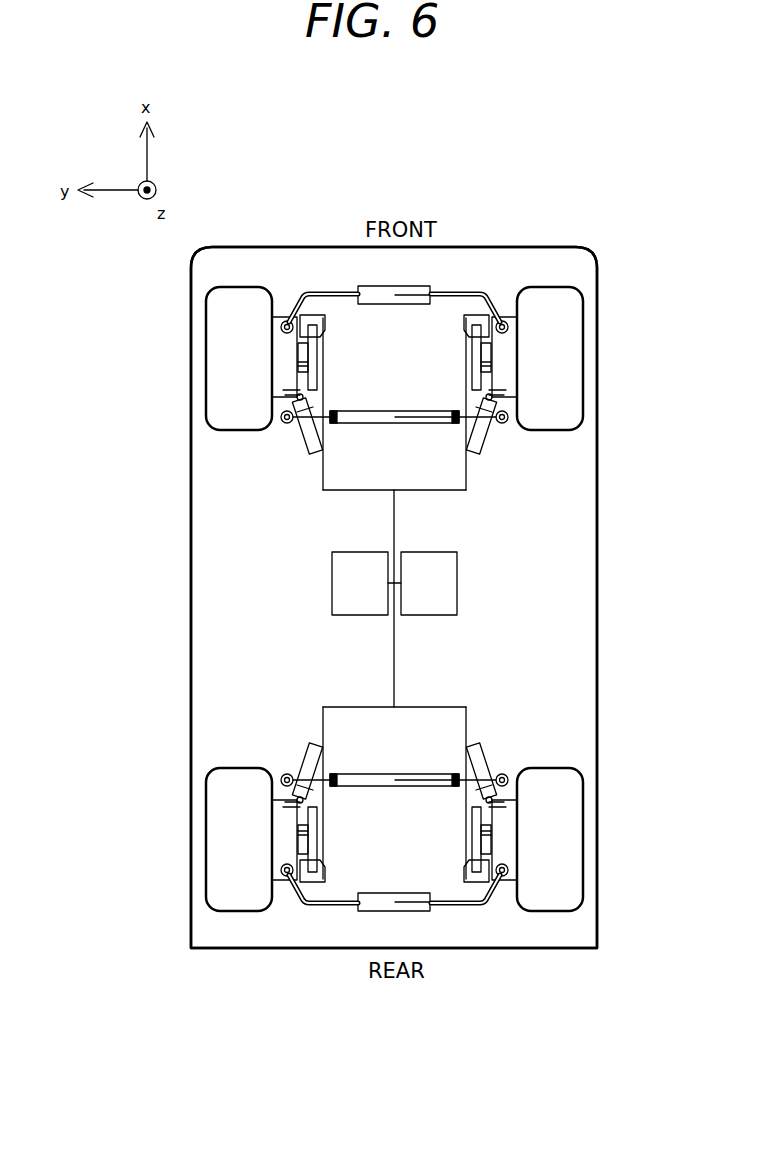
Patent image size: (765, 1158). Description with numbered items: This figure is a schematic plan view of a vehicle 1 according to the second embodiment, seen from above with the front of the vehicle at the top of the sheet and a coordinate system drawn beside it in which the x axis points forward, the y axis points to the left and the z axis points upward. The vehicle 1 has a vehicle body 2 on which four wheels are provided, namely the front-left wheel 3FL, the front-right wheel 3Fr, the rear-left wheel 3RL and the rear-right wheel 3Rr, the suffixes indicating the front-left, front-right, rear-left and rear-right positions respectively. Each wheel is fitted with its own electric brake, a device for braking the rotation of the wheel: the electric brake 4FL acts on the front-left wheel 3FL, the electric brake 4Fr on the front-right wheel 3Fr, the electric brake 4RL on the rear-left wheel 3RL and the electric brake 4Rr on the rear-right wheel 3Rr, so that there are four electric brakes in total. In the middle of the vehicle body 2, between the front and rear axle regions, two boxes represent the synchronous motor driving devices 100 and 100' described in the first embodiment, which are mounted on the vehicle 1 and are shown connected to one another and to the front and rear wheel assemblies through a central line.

The vehicle 1 is at (307, 187).
The vehicle body 2 is at (464, 247).
The front-left wheel 3FL is at (207, 351).
The front-right wheel 3Fr is at (597, 352).
The rear-left wheel 3RL is at (207, 830).
The rear-right wheel 3Rr is at (597, 830).
The electric brake 4FL is at (327, 328).
The electric brake 4Fr is at (462, 328).
The electric brake 4RL is at (328, 878).
The electric brake 4Rr is at (461, 878).
The synchronous motor driving device 100 is at (360, 558).
The synchronous motor driving device 100' is at (429, 558).